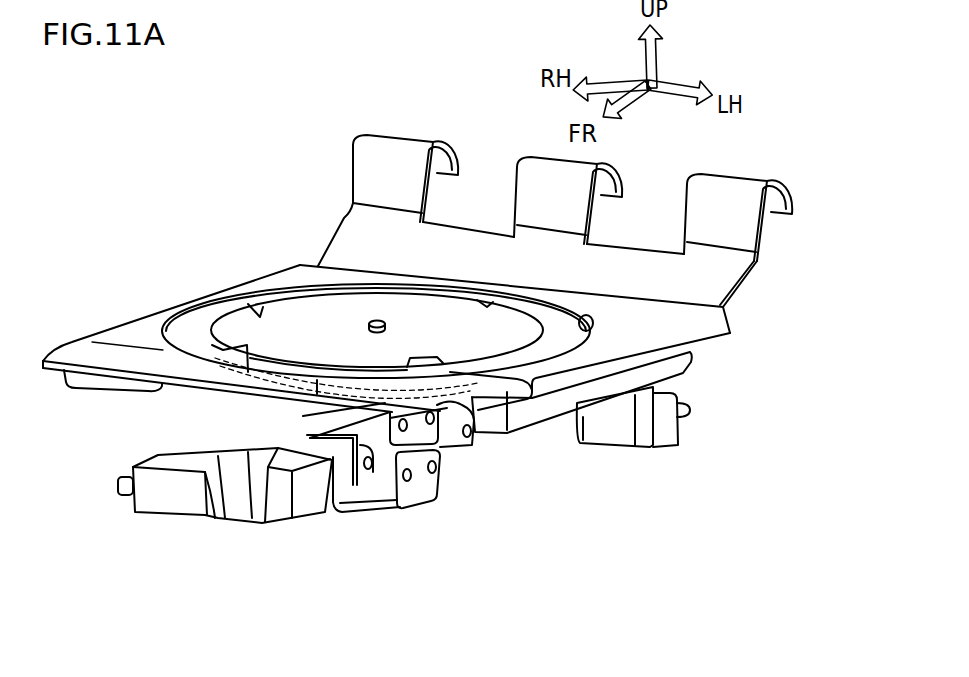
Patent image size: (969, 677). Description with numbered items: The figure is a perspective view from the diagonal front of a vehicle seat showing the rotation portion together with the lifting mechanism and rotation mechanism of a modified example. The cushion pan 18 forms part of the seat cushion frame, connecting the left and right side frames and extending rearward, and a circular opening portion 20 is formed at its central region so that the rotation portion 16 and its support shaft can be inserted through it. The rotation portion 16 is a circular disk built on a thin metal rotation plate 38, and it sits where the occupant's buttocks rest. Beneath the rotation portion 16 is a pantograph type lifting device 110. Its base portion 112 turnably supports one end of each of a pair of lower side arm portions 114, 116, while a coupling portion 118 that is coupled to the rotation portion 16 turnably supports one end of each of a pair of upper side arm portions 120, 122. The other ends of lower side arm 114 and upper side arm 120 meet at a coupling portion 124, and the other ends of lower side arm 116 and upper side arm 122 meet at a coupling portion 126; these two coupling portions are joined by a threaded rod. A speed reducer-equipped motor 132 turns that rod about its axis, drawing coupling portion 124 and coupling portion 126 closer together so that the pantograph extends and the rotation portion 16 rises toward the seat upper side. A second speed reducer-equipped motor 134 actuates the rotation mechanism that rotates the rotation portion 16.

The rotation portion 16 is at (377, 331).
The cushion pan 18 is at (648, 327).
The opening portion 20 is at (687, 311).
The rotation plate 38 is at (280, 318).
The lifting device 110 is at (413, 425).
The base portion 112 is at (408, 504).
The lower side arm portion 114 is at (537, 465).
The lower side arm portion 116 is at (335, 520).
The coupling portion 118 is at (412, 416).
The upper side arm portion 120 is at (447, 412).
The upper side arm portion 122 is at (386, 345).
The coupling portion 124 is at (471, 433).
The coupling portion 126 is at (335, 548).
The speed reducer-equipped motor 132 is at (153, 514).
The speed reducer-equipped motor 134 is at (666, 431).